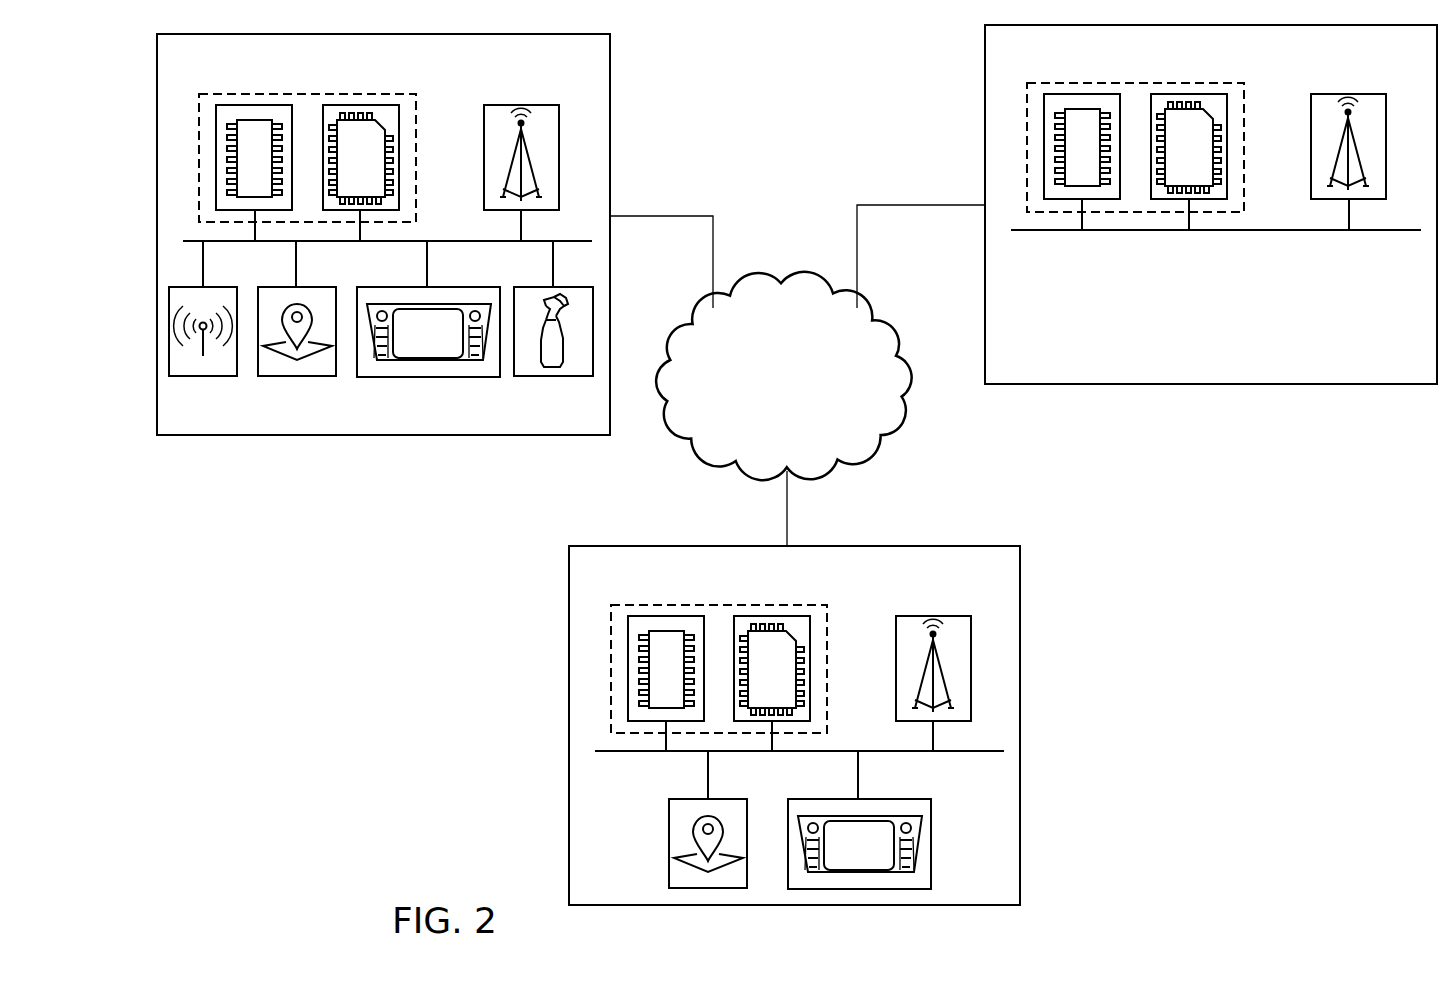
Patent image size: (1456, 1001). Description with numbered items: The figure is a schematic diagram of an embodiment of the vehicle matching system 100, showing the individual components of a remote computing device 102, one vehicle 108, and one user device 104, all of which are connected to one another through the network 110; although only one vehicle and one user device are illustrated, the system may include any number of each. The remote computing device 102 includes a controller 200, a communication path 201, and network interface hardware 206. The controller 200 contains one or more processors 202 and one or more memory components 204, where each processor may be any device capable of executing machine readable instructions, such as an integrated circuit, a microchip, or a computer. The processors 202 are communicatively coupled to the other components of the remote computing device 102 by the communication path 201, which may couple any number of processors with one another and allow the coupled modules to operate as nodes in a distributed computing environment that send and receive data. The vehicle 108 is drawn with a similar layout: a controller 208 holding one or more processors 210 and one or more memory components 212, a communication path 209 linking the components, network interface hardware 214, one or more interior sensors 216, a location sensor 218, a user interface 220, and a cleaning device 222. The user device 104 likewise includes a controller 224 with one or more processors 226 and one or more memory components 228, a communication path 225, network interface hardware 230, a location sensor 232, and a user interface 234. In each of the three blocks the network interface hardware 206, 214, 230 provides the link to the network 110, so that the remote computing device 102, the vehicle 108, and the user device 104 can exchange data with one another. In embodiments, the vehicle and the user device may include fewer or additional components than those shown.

The vehicle matching system 100 is at (1185, 503).
The remote computing device 102 is at (985, 60).
The user device 104 is at (569, 585).
The vehicle 108 is at (157, 72).
The network 110 is at (800, 286).
The controller 200 is at (1134, 83).
The communication path 201 is at (1268, 230).
The processors 202 is at (1082, 94).
The memory components 204 is at (1189, 94).
The network interface hardware 206 is at (1349, 94).
The controller 208 is at (306, 94).
The communication path 209 is at (461, 241).
The processors 210 is at (255, 105).
The memory components 212 is at (360, 105).
The network interface hardware 214 is at (521, 105).
The interior sensors 216 is at (203, 376).
The location sensor 218 is at (296, 376).
The user interface 220 is at (429, 377).
The cleaning device 222 is at (549, 376).
The controller 224 is at (717, 605).
The communication path 225 is at (876, 751).
The processors 226 is at (666, 616).
The memory components 228 is at (772, 616).
The network interface hardware 230 is at (933, 616).
The location sensor 232 is at (709, 887).
The user interface 234 is at (858, 887).